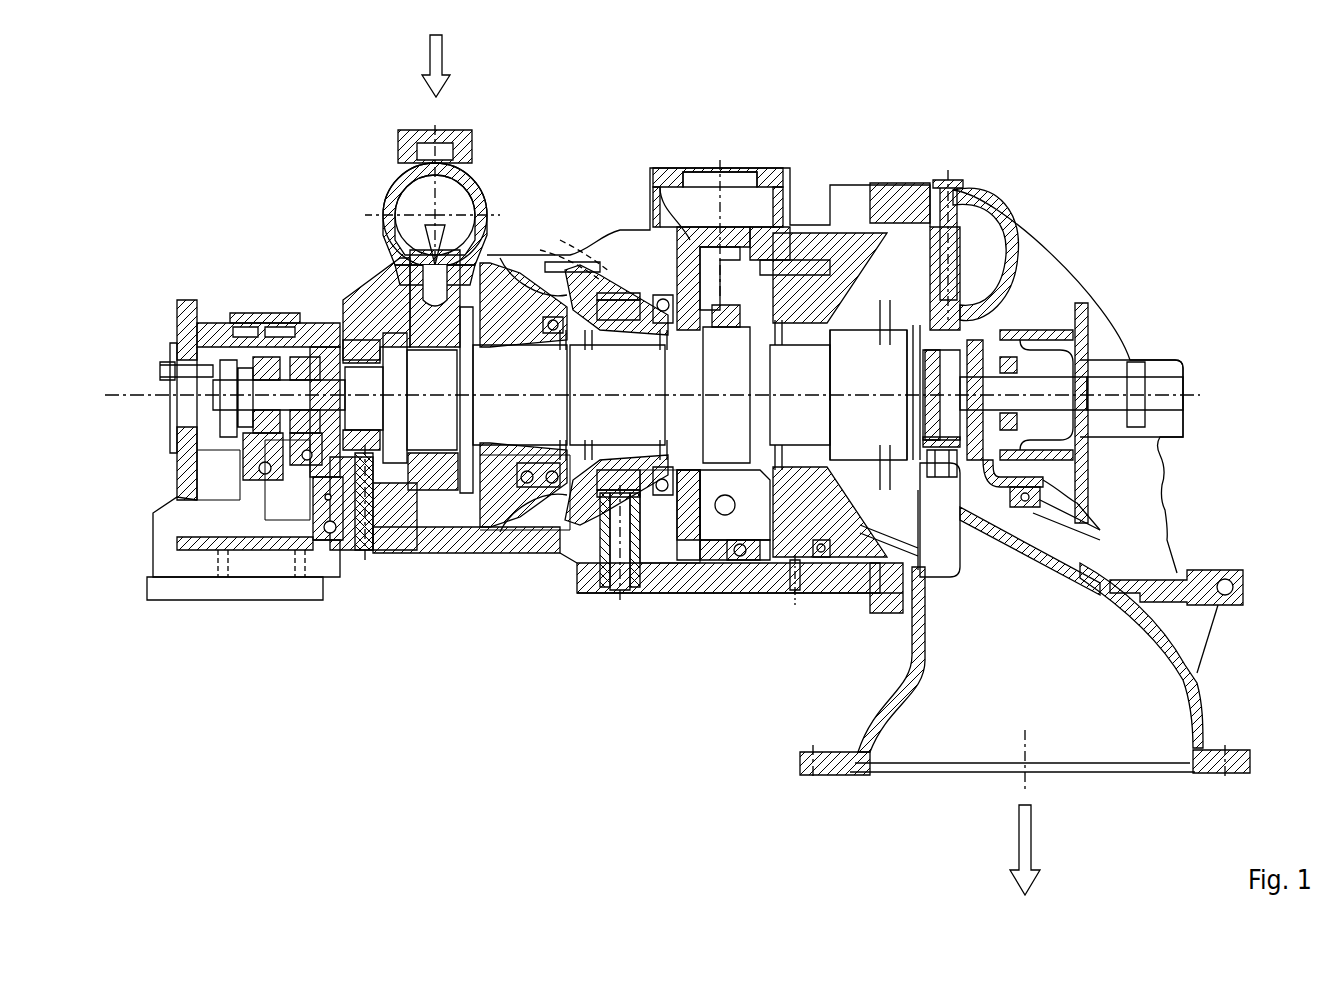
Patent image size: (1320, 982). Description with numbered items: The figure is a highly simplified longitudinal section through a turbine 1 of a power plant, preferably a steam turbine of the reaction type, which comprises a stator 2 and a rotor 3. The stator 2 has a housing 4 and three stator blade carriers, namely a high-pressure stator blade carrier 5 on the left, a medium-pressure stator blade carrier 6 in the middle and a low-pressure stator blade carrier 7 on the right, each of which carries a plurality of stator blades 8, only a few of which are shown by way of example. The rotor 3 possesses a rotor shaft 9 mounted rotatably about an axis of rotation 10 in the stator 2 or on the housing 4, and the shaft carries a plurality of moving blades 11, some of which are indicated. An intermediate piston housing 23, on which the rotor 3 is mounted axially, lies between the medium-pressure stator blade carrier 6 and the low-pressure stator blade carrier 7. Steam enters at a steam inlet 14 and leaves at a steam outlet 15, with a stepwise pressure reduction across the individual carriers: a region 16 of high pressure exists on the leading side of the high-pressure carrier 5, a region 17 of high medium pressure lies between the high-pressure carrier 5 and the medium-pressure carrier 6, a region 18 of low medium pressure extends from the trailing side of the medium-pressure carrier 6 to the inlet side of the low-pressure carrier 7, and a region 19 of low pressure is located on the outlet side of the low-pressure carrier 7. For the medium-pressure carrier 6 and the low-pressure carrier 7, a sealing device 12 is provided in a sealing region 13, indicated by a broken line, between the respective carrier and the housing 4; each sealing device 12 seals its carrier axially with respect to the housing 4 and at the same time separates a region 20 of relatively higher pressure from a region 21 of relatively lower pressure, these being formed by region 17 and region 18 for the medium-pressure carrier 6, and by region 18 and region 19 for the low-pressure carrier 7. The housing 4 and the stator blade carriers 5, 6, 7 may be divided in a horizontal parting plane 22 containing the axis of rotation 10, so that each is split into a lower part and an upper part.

The turbine 1 is at (1178, 258).
The stator 2 is at (608, 230).
The rotor 3 is at (897, 318).
The housing 4 is at (735, 595).
The high-pressure stator blade carrier 5 is at (530, 322).
The medium-pressure stator blade carrier 6 is at (657, 297).
The low-pressure stator blade carrier 7 is at (850, 250).
The stator blades 8 is at (545, 345).
The rotor shaft 9 is at (732, 387).
The axis of rotation 10 is at (113, 385).
The moving blades 11 is at (724, 395).
The sealing device 12 is at (597, 277).
The sealing region 13 is at (565, 560).
The steam inlet 14 is at (440, 140).
The steam outlet 15 is at (1100, 757).
The high-pressure region 16 is at (470, 285).
The high medium-pressure region 17 is at (548, 262).
The low medium-pressure region 18 is at (732, 180).
The low-pressure region 19 is at (972, 248).
The region having the relatively higher pressure 20 is at (525, 512).
The region having the relatively lower pressure 21 is at (668, 557).
The parting plane 22 is at (263, 450).
The intermediate piston housing 23 is at (700, 512).